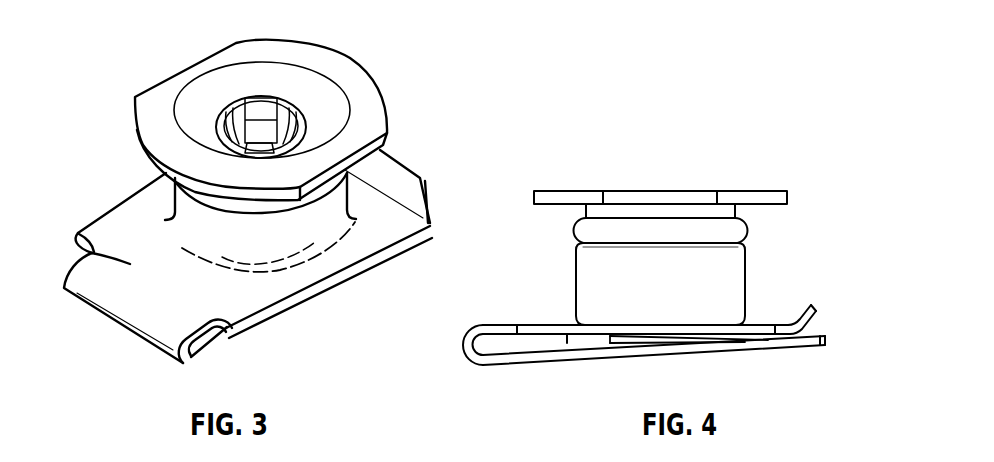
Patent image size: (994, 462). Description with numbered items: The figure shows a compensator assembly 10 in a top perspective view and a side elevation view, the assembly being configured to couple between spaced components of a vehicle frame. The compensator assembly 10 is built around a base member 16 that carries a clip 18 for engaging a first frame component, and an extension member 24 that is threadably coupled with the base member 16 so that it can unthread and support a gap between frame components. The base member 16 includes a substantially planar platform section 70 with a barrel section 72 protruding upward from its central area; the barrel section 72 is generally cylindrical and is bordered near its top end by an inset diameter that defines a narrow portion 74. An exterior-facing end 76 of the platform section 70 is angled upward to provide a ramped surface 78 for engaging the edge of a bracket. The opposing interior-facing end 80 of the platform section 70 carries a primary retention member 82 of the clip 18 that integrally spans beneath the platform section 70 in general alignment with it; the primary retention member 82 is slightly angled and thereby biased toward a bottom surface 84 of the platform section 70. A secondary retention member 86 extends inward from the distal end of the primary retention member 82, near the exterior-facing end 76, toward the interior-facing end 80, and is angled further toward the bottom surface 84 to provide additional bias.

In FIG. 3, the compensator assembly 10 is at (128, 62).
In FIG. 4, the compensator assembly 10 is at (587, 162).
In FIG. 3, the base member 16 is at (138, 223).
In FIG. 4, the base member 16 is at (605, 283).
In FIG. 3, the clip 18 is at (377, 265).
In FIG. 4, the clip 18 is at (520, 372).
In FIG. 3, the extension member 24 is at (343, 70).
In FIG. 4, the extension member 24 is at (787, 200).
In FIG. 3, the platform section 70 is at (90, 252).
In FIG. 4, the platform section 70 is at (530, 328).
In FIG. 3, the barrel section 72 is at (193, 210).
In FIG. 4, the barrel section 72 is at (720, 268).
In FIG. 4, the narrow portion 74 is at (572, 226).
In FIG. 4, the exterior-facing end 76 is at (818, 302).
In FIG. 4, the ramped surface 78 is at (807, 323).
In FIG. 4, the interior-facing end 80 is at (463, 363).
In FIG. 3, the primary retention member 82 is at (213, 350).
In FIG. 4, the primary retention member 82 is at (543, 357).
In FIG. 4, the bottom surface 84 is at (567, 337).
In FIG. 4, the secondary retention member 86 is at (632, 343).